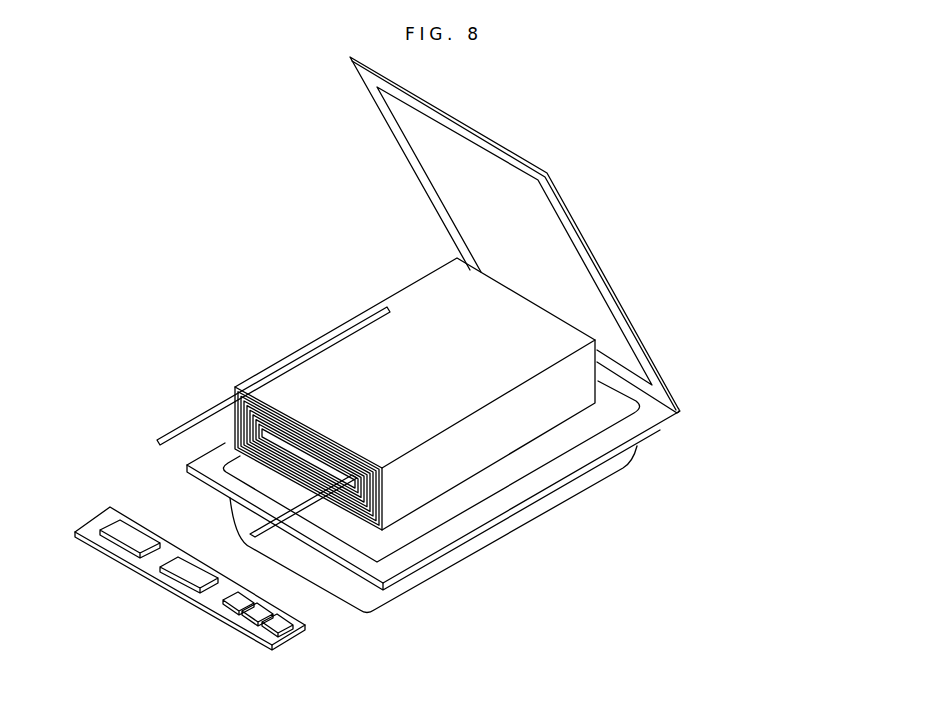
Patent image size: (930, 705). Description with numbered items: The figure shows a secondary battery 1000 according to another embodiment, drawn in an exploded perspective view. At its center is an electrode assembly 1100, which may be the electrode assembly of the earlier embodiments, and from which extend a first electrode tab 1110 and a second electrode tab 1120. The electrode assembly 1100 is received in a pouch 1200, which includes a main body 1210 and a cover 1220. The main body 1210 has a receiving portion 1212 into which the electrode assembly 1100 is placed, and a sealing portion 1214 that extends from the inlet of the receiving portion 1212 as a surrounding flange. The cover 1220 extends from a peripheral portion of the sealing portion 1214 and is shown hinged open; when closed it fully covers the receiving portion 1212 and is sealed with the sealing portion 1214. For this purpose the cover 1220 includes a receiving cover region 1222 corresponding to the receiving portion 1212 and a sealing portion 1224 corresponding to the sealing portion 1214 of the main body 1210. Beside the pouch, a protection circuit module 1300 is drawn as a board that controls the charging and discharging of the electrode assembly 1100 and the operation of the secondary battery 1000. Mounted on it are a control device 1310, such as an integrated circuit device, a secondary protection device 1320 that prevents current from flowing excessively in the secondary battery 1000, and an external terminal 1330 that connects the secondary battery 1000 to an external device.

The secondary battery 1000 is at (184, 135).
The electrode assembly 1100 is at (292, 282).
The first electrode tab 1110 is at (188, 423).
The second electrode tab 1120 is at (268, 533).
The pouch 1200 is at (810, 288).
The main body 1210 is at (747, 425).
The receiving portion 1212 is at (592, 422).
The sealing portion 1214 is at (637, 438).
The cover 1220 is at (747, 268).
The receiving cover region 1222 is at (587, 243).
The sealing portion 1224 is at (620, 317).
The protection circuit module 1300 is at (145, 565).
The control device 1310 is at (105, 535).
The secondary protection device 1320 is at (178, 570).
The external terminal 1330 is at (268, 626).